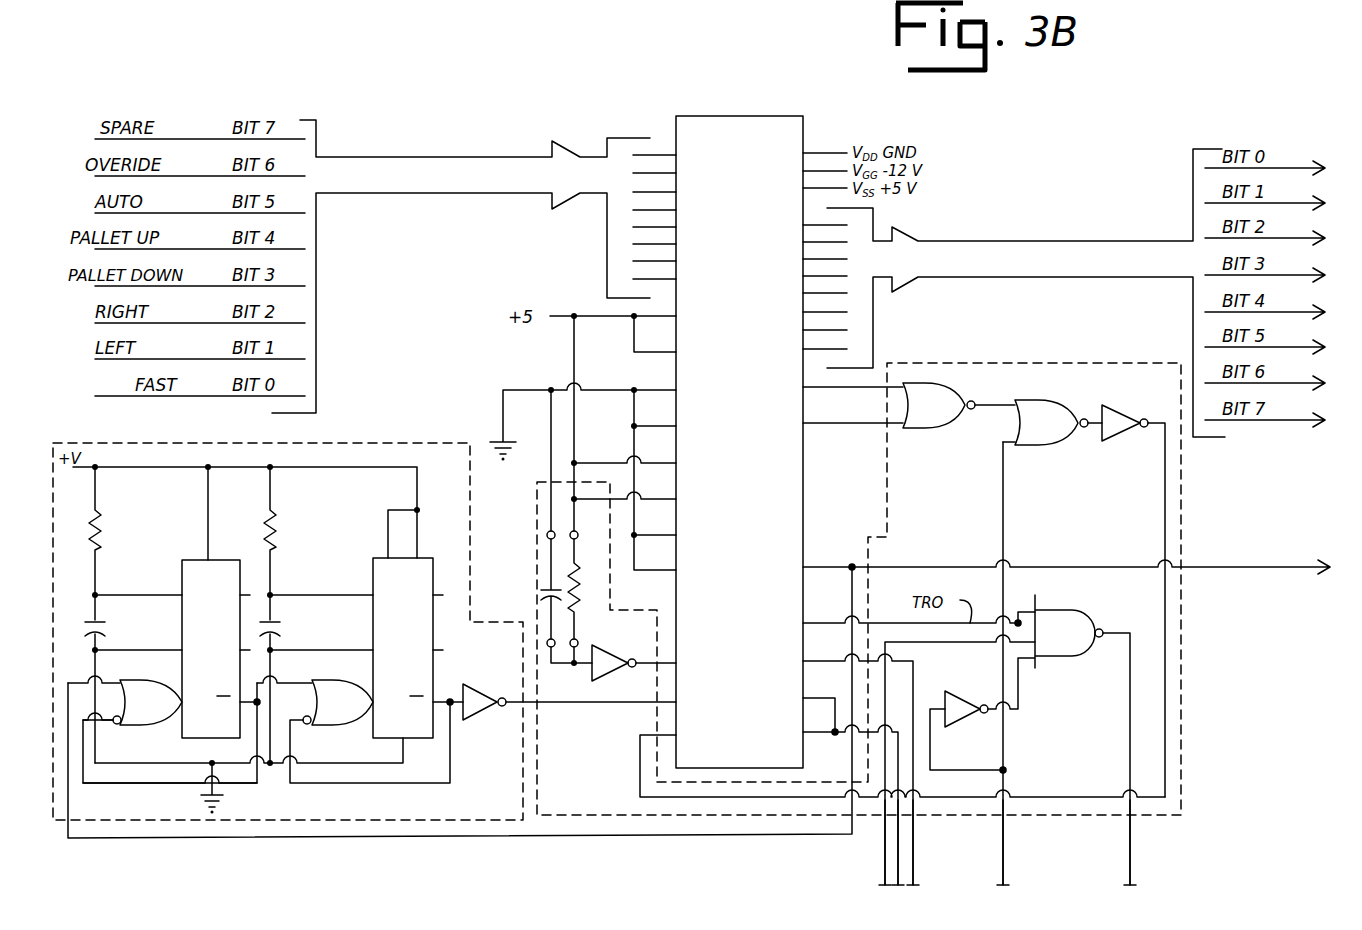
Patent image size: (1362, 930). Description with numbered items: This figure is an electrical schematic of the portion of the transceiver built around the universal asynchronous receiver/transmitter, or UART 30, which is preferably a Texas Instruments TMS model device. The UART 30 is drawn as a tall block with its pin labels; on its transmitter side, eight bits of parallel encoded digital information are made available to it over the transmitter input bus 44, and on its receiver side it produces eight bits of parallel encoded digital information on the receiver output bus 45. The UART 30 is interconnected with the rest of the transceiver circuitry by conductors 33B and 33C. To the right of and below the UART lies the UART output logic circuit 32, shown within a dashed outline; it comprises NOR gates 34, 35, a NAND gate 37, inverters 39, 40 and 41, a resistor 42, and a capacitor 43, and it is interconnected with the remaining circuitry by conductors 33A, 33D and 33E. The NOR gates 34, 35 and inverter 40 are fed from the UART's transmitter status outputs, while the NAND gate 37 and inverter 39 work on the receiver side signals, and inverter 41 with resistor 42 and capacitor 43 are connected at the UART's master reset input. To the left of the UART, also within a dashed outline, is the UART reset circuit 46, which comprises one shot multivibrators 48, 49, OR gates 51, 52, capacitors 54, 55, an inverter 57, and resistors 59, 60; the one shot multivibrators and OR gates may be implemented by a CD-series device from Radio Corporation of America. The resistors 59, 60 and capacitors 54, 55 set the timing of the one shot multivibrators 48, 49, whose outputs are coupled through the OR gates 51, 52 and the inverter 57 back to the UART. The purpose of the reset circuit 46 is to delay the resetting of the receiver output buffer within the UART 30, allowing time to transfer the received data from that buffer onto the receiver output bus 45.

The universal asynchronous receiver/transmitter (UART) 30 is at (690, 112).
The UART output logic circuit 32 is at (537, 490).
The conductor 33A is at (885, 872).
The conductor 33B is at (905, 838).
The conductor 33C is at (918, 872).
The conductor 33D is at (1003, 875).
The conductor 33E is at (1130, 853).
The NOR gate 34 is at (948, 383).
The NOR gate 35 is at (1040, 400).
The NAND gate 37 is at (1075, 610).
The inverter 39 is at (975, 680).
The inverter 40 is at (1118, 415).
The inverter 41 is at (604, 656).
The resistor 42 is at (578, 590).
The capacitor 43 is at (546, 590).
The transmitter input bus 44 is at (473, 157).
The receiver output bus 45 is at (1050, 241).
The UART reset circuit 46 is at (378, 443).
The one shot multivibrator 48 is at (195, 560).
The one shot multivibrator 49 is at (373, 575).
The OR gate 51 is at (162, 732).
The OR gate 52 is at (355, 732).
The capacitor 54 is at (100, 620).
The capacitor 55 is at (275, 620).
The inverter 57 is at (482, 694).
The resistor 59 is at (100, 530).
The resistor 60 is at (268, 518).